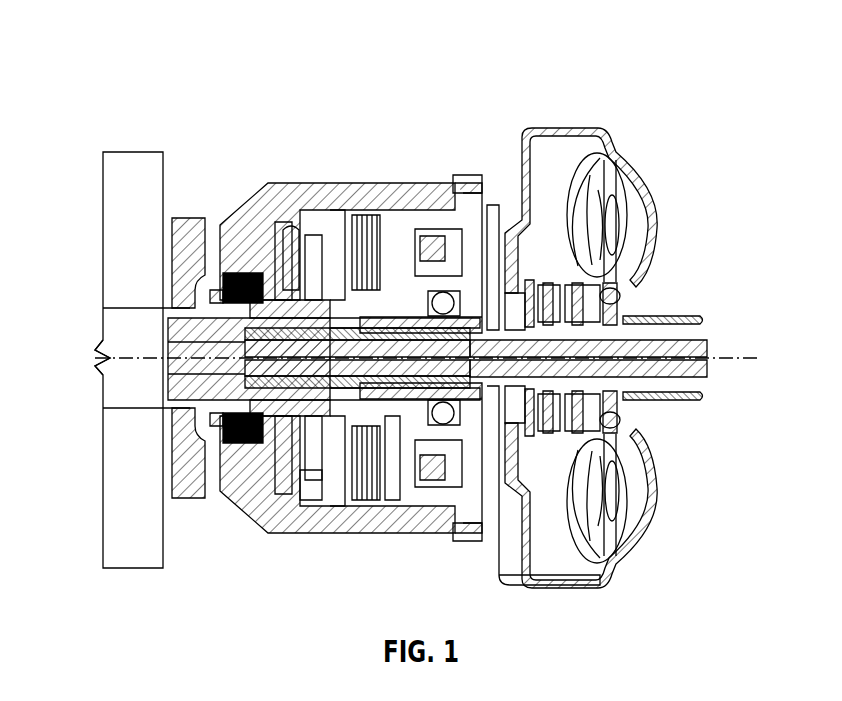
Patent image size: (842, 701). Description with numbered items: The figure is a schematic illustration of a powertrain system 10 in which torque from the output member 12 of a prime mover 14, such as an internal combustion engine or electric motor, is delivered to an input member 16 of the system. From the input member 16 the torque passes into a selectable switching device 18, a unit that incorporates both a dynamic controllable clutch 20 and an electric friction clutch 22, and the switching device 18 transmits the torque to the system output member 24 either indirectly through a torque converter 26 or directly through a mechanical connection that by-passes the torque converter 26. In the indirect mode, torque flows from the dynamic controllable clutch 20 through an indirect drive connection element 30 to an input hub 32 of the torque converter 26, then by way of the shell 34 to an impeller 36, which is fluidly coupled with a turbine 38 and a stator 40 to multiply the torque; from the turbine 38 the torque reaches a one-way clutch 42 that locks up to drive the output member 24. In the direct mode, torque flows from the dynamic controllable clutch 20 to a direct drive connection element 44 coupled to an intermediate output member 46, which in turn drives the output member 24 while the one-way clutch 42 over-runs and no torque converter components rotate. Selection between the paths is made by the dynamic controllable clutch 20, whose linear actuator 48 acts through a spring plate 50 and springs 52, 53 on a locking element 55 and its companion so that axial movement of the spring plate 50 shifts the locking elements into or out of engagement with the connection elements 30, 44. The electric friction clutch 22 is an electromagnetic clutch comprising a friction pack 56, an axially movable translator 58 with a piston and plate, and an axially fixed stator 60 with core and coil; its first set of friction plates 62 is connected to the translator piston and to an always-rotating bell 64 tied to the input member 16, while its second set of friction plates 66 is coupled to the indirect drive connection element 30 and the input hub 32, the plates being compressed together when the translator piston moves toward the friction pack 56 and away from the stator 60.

The powertrain system 10 is at (380, 50).
The output member 12 is at (118, 395).
The prime mover 14 is at (120, 512).
The input member 16 is at (200, 345).
The selectable switching device 18 is at (292, 215).
The dynamic controllable clutch 20 is at (250, 280).
The electric friction clutch 22 is at (400, 185).
The output member 24 is at (700, 350).
The torque converter 26 is at (528, 135).
The indirect drive connection element 30 is at (362, 400).
The input hub 32 is at (488, 440).
The shell 34 is at (602, 140).
The impeller 36 is at (640, 215).
The turbine 38 is at (582, 215).
The stator 40 is at (625, 292).
The one-way clutch 42 is at (512, 280).
The direct drive connection element 44 is at (285, 470).
The intermediate output member 46 is at (270, 390).
The actuator 48 is at (195, 290).
The spring plate 50 is at (200, 480).
The spring 52 is at (283, 270).
The spring 53 is at (310, 450).
The locking element 55 is at (320, 270).
The friction pack 56 is at (385, 455).
The translator 58 is at (440, 230).
The stator 60 is at (468, 205).
The first set of friction plates 62 is at (355, 480).
The bell 64 is at (376, 230).
The second set of friction plates 66 is at (418, 500).